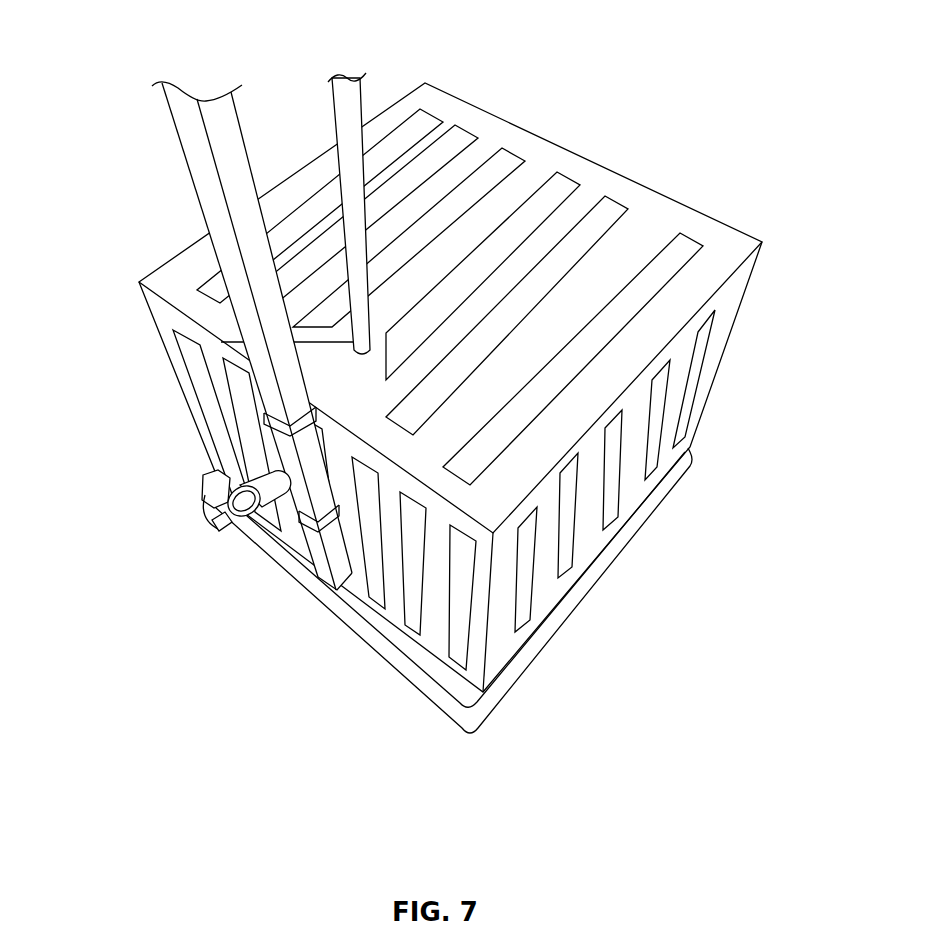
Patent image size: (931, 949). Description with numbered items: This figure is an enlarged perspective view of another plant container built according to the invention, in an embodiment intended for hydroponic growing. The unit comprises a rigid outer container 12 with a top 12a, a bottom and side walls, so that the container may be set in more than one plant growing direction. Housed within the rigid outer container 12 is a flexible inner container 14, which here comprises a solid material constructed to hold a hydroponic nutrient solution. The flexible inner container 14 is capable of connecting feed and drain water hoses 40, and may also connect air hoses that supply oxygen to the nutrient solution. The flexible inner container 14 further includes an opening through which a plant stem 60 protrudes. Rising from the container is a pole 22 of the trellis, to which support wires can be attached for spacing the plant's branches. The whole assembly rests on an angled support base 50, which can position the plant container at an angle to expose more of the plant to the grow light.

The rigid outer container 12 is at (447, 637).
The top 12a is at (727, 243).
The flexible inner container 14 is at (577, 353).
The pole 22 is at (188, 140).
The feed and drain water hoses 40 is at (213, 527).
The angled support base 50 is at (340, 614).
The plant stem 60 is at (348, 97).